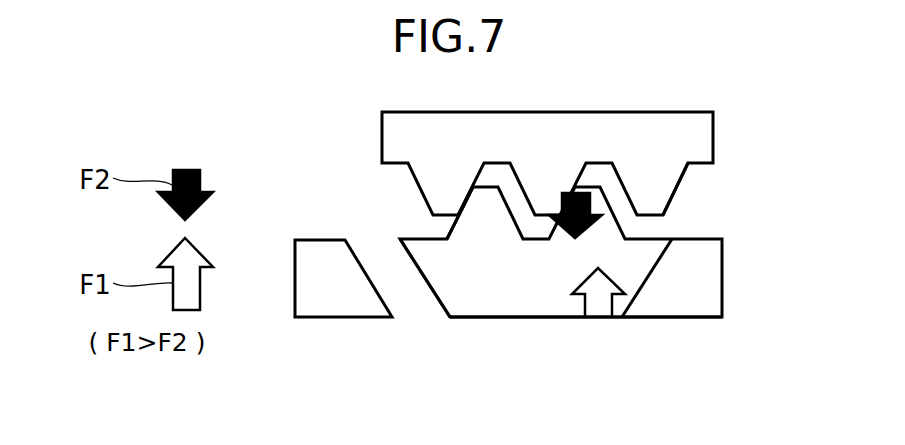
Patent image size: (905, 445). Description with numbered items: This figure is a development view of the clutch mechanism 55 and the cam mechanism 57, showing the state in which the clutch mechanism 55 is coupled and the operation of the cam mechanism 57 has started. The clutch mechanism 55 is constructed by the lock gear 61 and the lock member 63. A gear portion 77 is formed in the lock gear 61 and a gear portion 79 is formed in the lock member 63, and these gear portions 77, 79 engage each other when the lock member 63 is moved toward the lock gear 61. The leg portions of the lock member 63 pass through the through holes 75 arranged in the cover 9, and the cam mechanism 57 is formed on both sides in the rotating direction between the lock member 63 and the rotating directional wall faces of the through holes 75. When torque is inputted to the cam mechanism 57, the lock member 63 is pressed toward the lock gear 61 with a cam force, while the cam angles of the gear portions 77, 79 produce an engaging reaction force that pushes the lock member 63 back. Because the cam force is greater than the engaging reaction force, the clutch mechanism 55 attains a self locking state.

The cover 9 is at (722, 270).
The clutch mechanism 55 is at (378, 176).
The cam mechanism 57 is at (640, 296).
The lock gear 61 is at (713, 138).
The lock member 63 is at (505, 317).
The through holes 75 is at (357, 245).
The gear portion 77 is at (678, 183).
The gear portion 79 is at (452, 233).